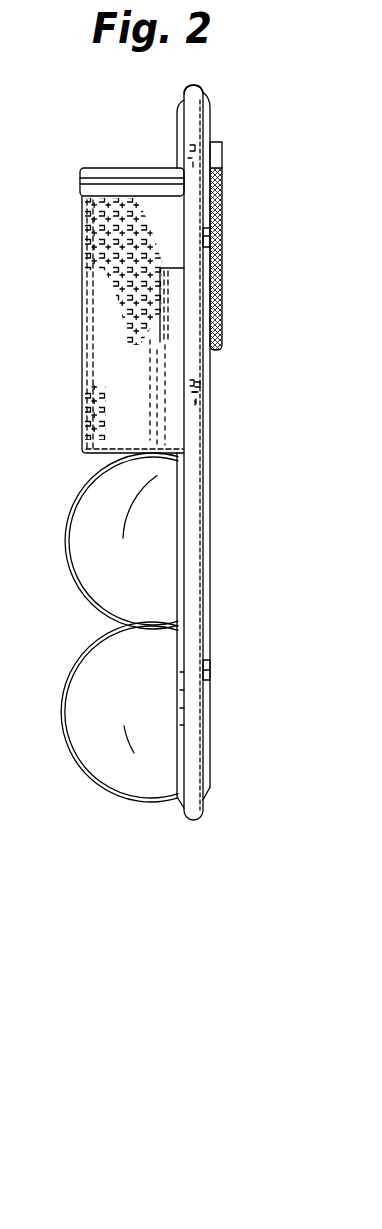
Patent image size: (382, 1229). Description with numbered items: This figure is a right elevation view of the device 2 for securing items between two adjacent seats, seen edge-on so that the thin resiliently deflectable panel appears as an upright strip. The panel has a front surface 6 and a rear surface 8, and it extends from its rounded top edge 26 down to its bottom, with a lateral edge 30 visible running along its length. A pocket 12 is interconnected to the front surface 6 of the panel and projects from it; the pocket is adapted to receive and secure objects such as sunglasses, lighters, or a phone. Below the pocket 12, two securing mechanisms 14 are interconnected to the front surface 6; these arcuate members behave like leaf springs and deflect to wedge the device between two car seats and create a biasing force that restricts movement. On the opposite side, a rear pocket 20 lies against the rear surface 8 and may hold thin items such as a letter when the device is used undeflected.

The device for securing items between two adjacent seats 2 is at (87, 133).
The front surface 6 is at (177, 150).
The rear surface 8 is at (210, 130).
The pocket 12 is at (98, 170).
The securing mechanism 14 is at (125, 580).
The rear pocket 20 is at (222, 190).
The top edge 26 is at (192, 83).
The lateral edge 30 is at (203, 398).